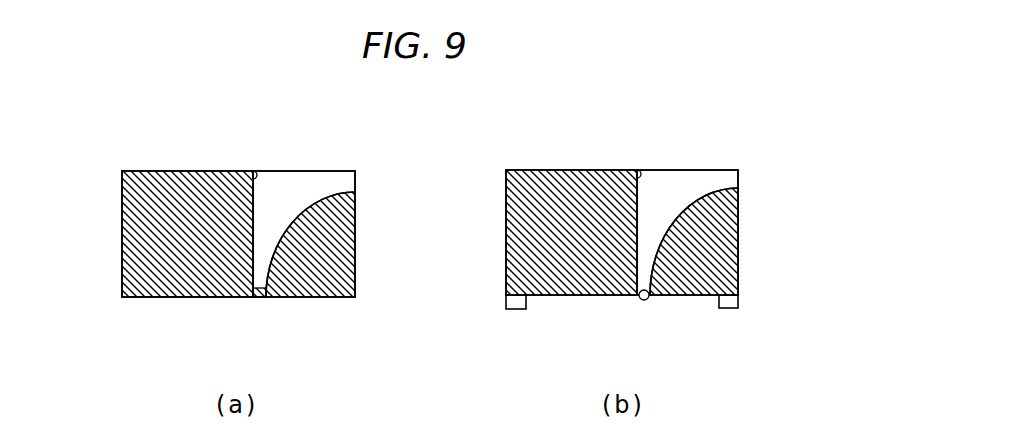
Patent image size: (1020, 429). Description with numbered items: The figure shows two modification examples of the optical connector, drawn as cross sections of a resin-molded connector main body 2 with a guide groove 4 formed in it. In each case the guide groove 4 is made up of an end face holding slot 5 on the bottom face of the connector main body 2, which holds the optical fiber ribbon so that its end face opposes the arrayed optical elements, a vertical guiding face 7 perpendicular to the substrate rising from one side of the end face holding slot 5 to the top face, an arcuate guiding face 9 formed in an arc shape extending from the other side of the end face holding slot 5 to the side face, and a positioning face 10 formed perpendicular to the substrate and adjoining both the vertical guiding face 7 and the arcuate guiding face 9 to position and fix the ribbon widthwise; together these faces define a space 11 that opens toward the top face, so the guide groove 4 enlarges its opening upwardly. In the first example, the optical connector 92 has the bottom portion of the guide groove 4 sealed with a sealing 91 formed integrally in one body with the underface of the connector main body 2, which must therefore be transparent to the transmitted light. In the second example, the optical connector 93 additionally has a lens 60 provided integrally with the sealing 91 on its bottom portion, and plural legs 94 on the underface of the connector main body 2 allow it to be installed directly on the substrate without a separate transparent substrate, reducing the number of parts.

The optical connector 92 is at (148, 158).
The optical connector 93 is at (540, 158).
The connector main body 2 is at (122, 250).
The guide groove 4 is at (348, 187).
The vertical guiding face 7 is at (259, 171).
The arcuate guiding face 9 is at (332, 190).
The positioning face 10 is at (292, 171).
The space 11 is at (286, 215).
The end face holding slot 5 is at (263, 298).
The sealing 91 is at (257, 297).
The lens 60 is at (640, 298).
The legs 94 is at (737, 300).